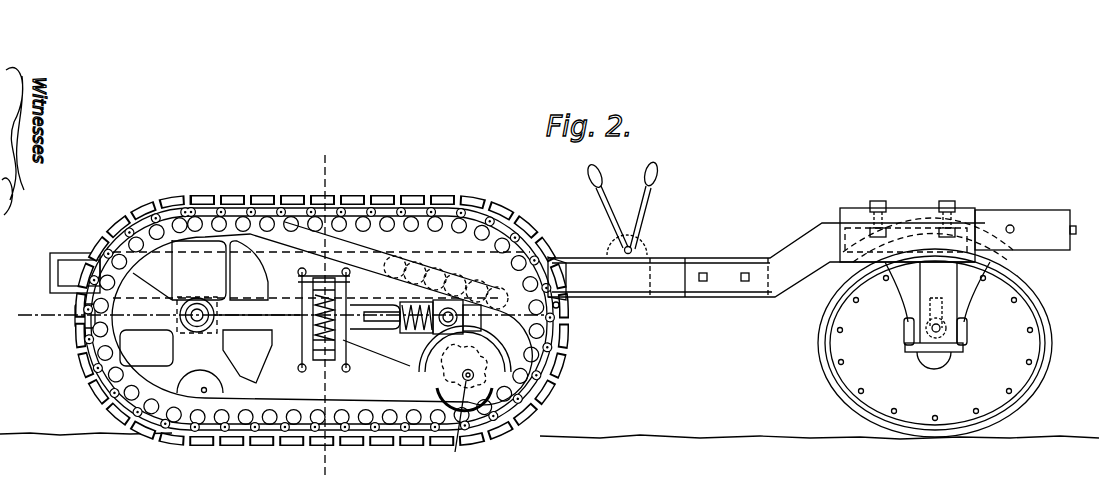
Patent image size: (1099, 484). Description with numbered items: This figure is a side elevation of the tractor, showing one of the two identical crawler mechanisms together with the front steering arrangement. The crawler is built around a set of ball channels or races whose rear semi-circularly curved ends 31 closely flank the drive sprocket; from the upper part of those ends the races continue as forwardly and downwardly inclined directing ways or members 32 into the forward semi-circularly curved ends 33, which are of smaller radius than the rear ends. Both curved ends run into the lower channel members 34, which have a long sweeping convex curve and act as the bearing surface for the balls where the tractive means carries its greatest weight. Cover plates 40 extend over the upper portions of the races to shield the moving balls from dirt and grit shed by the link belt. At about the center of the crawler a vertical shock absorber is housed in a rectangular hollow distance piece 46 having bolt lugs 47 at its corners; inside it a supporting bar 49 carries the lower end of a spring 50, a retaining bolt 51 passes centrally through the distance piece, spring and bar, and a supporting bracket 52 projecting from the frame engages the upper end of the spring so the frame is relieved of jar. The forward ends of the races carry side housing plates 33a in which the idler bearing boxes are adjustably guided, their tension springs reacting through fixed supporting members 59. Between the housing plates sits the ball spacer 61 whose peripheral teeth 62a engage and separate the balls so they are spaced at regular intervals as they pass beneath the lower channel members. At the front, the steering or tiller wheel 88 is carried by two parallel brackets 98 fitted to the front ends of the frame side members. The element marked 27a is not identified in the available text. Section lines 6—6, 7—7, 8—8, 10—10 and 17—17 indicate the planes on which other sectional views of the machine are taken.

The section line 6— 6 is at (586, 313).
The section line 7— 7 is at (252, 275).
The section line 8— 8 is at (325, 306).
The section line 10— 10 is at (102, 252).
The section line 17— 17 is at (202, 446).
The axle hub 27a is at (171, 315).
The rear semi-circularly curved ends 31 is at (146, 348).
The directing ways or members 32 is at (403, 263).
The forward semi-circularly curved ends 33 is at (540, 340).
The side housing plates 33a is at (523, 387).
The lower channel members 34 is at (352, 432).
The cover plates 40 is at (458, 275).
The distance piece or member 46 is at (356, 334).
The bolt lugs 47 is at (372, 366).
The supporting bar 49 is at (280, 350).
The spring 50 is at (257, 314).
The retaining bolt 51 is at (330, 252).
The supporting bracket 52 is at (304, 370).
The fixed supporting members 59 is at (350, 289).
The ball spacer 61 is at (426, 370).
The peripheral teeth 62a is at (453, 422).
The steering or tiller wheel 88 is at (1049, 355).
The forward extensions or parallel brackets 98 is at (830, 228).